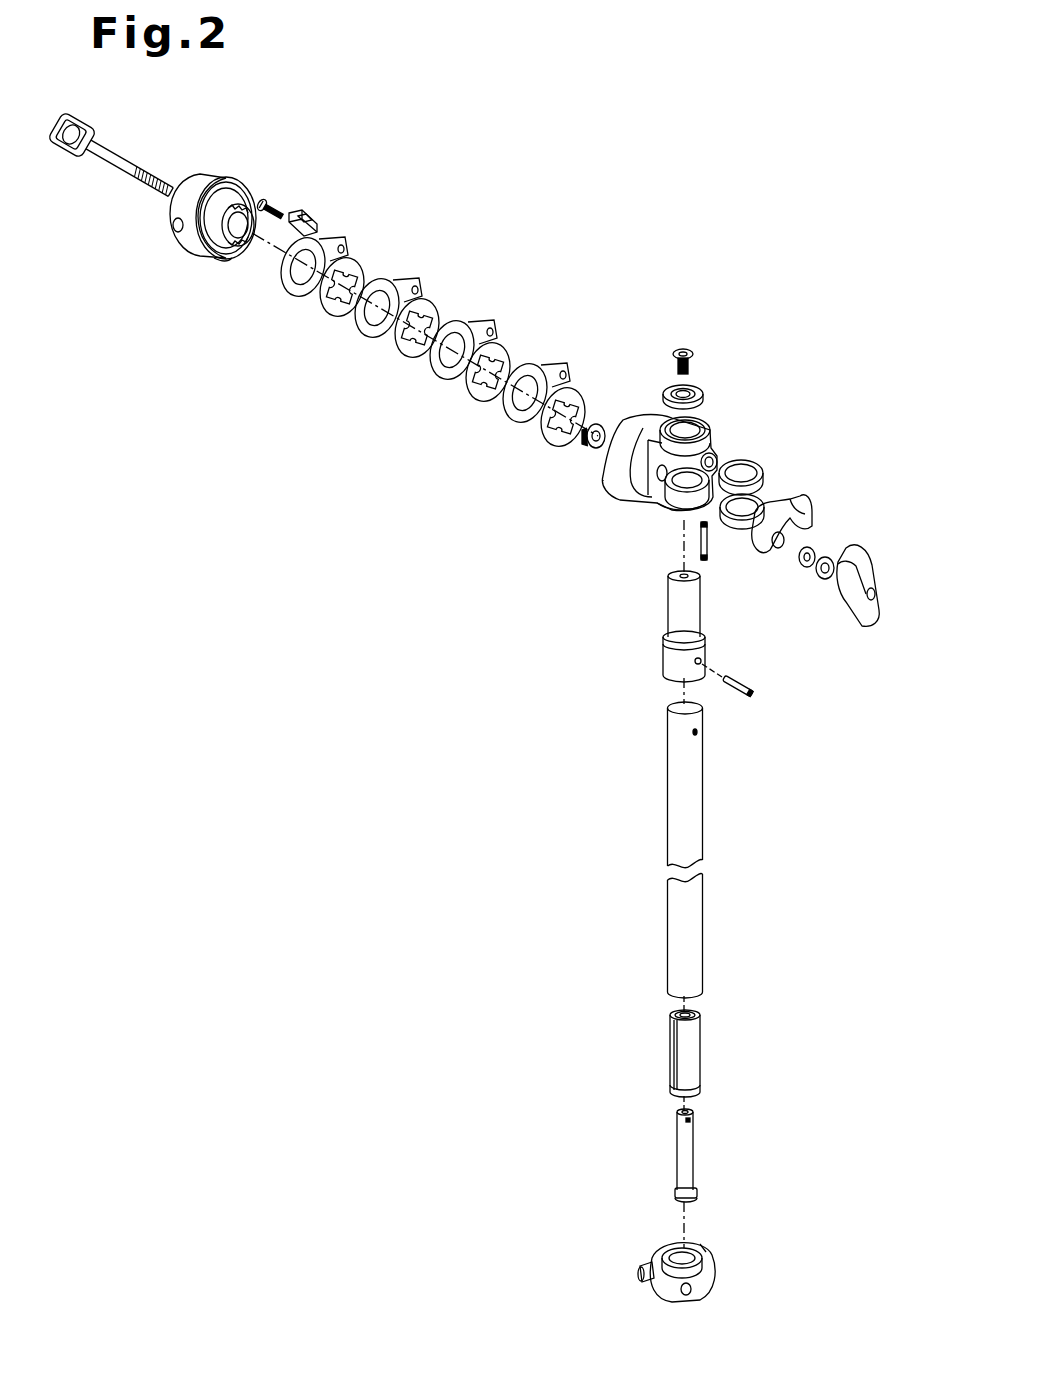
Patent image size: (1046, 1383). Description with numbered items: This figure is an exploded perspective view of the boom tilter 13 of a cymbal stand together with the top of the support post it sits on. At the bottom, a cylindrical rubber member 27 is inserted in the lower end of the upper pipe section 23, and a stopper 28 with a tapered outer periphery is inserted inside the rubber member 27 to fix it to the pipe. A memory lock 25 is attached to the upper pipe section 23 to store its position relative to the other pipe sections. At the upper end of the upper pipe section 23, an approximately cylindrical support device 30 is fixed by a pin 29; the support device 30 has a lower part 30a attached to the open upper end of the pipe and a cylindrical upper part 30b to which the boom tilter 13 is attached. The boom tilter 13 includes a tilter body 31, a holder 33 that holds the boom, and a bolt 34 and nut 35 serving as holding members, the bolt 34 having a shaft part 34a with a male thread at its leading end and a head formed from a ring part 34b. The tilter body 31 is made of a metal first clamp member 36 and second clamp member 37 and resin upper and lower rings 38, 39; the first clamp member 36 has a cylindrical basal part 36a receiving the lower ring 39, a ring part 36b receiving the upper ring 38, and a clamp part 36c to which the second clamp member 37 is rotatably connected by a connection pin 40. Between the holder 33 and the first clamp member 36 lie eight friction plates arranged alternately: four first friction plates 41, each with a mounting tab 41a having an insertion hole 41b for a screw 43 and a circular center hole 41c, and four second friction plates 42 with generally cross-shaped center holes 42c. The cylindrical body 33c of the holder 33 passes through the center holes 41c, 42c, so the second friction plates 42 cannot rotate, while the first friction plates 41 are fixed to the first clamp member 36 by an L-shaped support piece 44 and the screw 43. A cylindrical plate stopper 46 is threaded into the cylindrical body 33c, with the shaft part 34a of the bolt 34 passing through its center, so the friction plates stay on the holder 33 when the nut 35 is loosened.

The boom tilter 13 is at (558, 234).
The upper pipe section 23 is at (704, 790).
The memory lock 25 is at (714, 1266).
The rubber member 27 is at (702, 1046).
The stopper 28 is at (700, 1152).
The pin 29 is at (752, 688).
The support device 30 is at (645, 637).
The lower part 30a is at (668, 676).
The upper part 30b is at (668, 608).
The tilter body 31 is at (628, 505).
The holder 33 is at (207, 211).
The cylindrical body 33c is at (214, 258).
The bolt 34 is at (111, 164).
The shaft part 34a is at (124, 176).
The ring part 34b is at (60, 152).
The nut 35 is at (858, 624).
The first clamp member 36 is at (694, 464).
The basal part 36a is at (676, 504).
The ring part 36b is at (706, 414).
The clamp part 36c is at (716, 454).
The second clamp member 37 is at (760, 554).
The upper ring 38 is at (760, 470).
The lower ring 39 is at (730, 522).
The connection pin 40 is at (706, 562).
The first friction plate 41 is at (323, 258).
The mounting tab 41a is at (383, 240).
The insertion hole 41b is at (351, 230).
The center hole 41c is at (269, 266).
The second friction plate 42 is at (306, 312).
The center hole 42c is at (300, 307).
The screw 43 is at (262, 200).
The support piece 44 is at (304, 212).
The plate stopper 46 is at (594, 448).